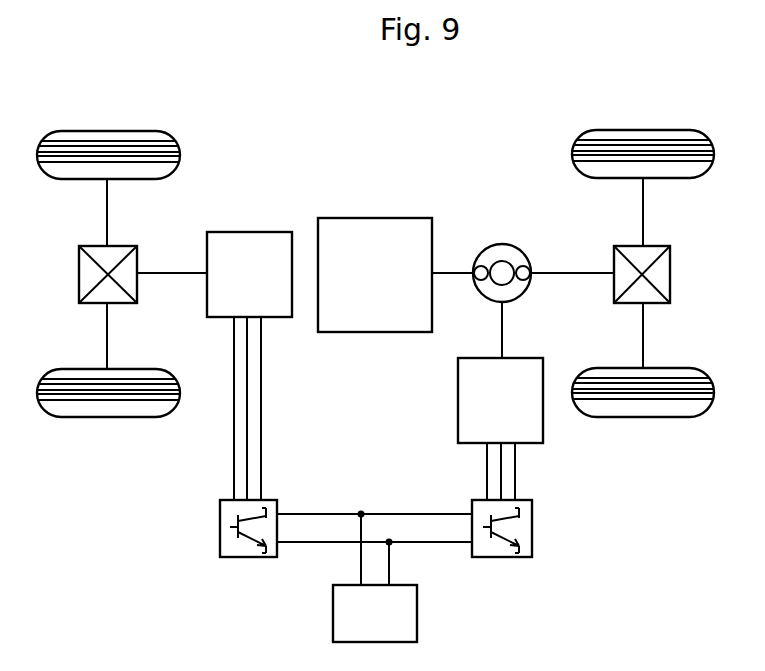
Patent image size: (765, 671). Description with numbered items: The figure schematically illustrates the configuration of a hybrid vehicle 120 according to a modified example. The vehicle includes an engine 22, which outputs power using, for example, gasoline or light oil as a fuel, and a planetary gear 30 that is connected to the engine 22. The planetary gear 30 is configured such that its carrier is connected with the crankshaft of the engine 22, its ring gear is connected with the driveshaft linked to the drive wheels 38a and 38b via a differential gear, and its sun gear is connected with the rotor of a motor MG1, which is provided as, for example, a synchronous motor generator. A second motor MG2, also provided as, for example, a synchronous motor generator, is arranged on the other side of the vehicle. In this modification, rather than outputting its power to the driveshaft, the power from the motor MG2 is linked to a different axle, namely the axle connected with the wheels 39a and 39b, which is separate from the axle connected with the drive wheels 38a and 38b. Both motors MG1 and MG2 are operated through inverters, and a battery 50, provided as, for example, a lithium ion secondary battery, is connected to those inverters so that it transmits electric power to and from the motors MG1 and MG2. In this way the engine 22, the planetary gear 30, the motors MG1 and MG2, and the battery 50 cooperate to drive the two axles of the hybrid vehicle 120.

The hybrid vehicle 120 is at (459, 88).
The engine 22 is at (375, 217).
The planetary gear 30 is at (502, 243).
The drive wheel 38a is at (643, 130).
The drive wheel 38b is at (643, 418).
The wheel 39a is at (110, 130).
The wheel 39b is at (108, 418).
The battery 50 is at (417, 613).
The motor MG1 is at (458, 399).
The motor MG2 is at (247, 230).